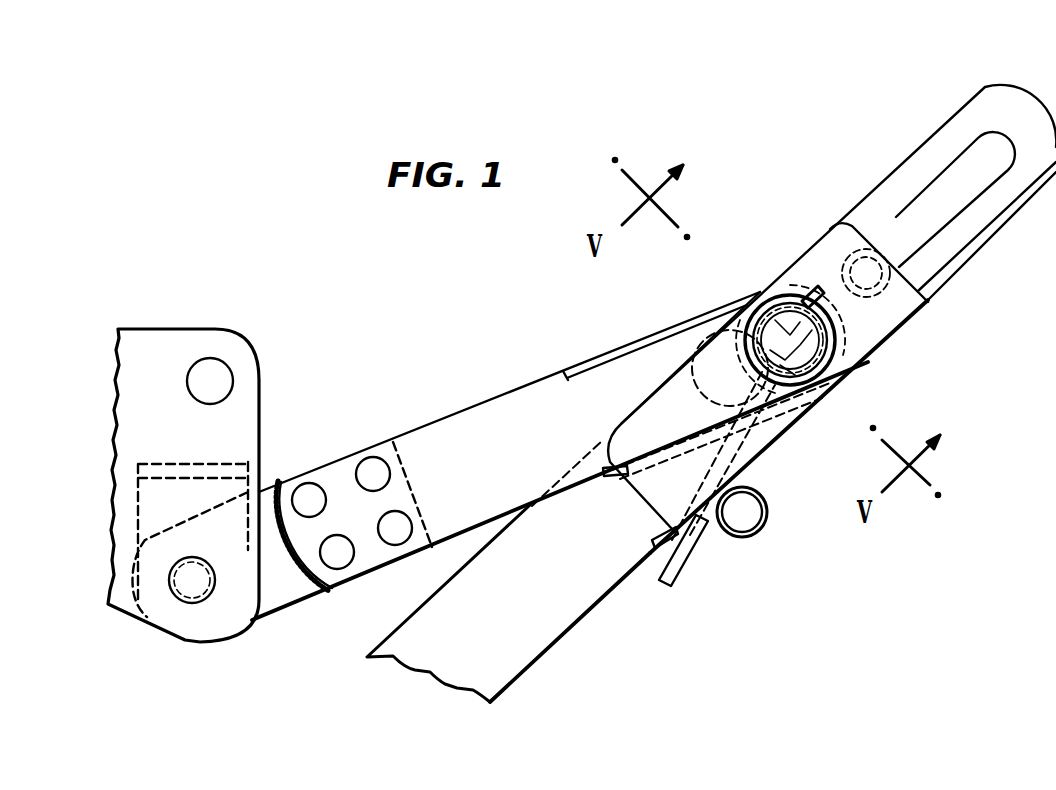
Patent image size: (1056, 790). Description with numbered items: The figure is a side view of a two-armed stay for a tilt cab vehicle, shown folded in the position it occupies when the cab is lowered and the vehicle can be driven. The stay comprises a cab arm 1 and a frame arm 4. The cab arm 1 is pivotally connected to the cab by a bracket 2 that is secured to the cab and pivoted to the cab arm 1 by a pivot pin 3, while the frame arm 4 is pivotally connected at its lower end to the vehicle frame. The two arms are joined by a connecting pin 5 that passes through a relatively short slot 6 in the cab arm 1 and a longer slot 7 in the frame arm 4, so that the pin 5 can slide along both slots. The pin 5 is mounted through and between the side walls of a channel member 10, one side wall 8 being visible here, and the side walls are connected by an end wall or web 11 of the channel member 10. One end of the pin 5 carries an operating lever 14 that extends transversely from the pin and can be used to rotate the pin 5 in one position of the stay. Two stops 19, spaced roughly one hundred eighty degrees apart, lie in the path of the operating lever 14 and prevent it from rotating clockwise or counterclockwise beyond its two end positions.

The cab arm 1 is at (494, 414).
The bracket 2 is at (250, 387).
The pivot pin 3 is at (192, 585).
The frame arm 4 is at (588, 567).
The connecting pin 5 is at (813, 340).
The slot 6 is at (710, 363).
The slot 7 is at (913, 223).
The side wall 8 is at (813, 252).
The channel member 10 is at (794, 361).
The end wall 11 is at (780, 445).
The operating lever 14 is at (690, 552).
The stops 19 is at (850, 255).